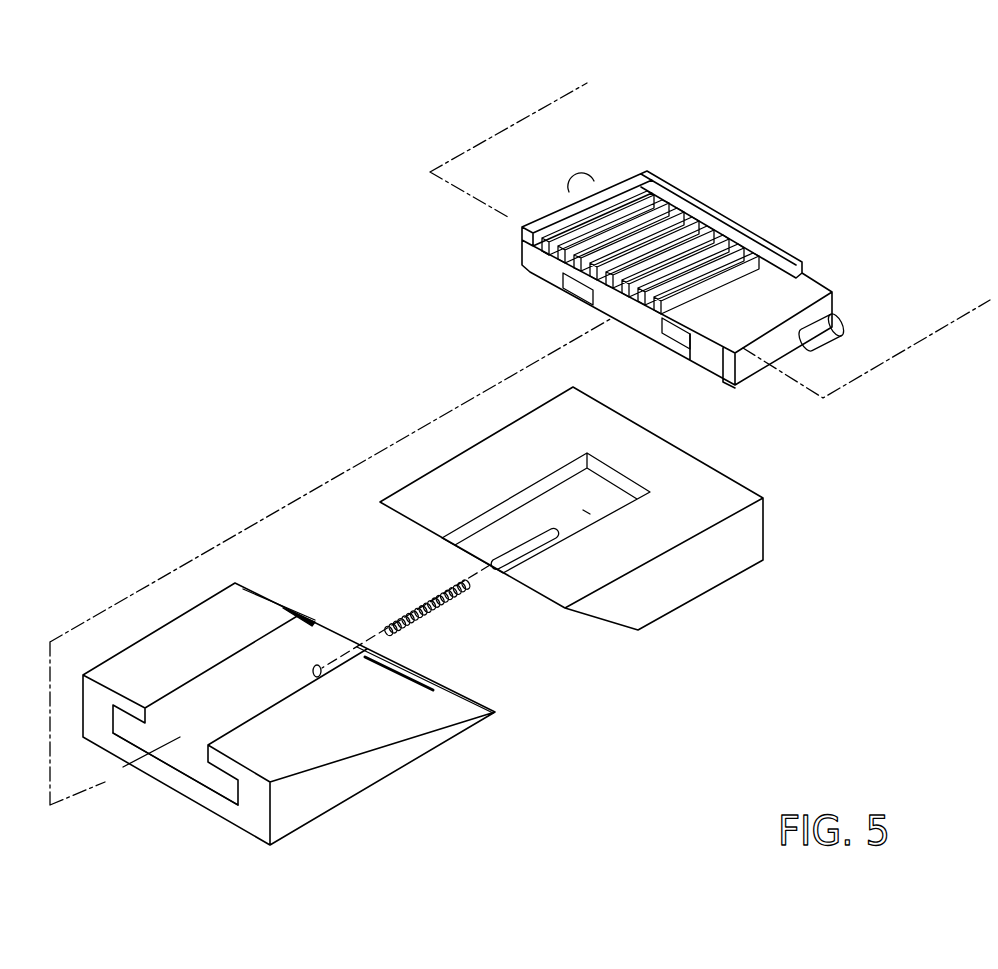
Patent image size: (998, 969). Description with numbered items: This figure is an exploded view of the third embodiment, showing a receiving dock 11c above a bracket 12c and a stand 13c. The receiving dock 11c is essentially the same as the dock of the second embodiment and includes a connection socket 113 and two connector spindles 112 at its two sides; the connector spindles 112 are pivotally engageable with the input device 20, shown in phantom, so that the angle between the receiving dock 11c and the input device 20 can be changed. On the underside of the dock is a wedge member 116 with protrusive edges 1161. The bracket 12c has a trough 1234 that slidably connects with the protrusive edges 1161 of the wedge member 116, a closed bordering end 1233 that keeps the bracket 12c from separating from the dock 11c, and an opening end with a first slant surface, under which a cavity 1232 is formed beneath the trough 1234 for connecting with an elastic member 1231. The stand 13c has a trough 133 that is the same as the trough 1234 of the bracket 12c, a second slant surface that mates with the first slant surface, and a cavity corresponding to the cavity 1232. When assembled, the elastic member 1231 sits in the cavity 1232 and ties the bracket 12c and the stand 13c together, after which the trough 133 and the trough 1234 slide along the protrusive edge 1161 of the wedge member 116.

The receiving dock 11c is at (715, 230).
The connector spindles 112 is at (835, 315).
The connection socket 113 is at (567, 247).
The wedge member 116 is at (627, 311).
The protrusive edges 1161 is at (578, 290).
The input device 20 is at (910, 332).
The bracket 12c is at (605, 547).
The elastic member 1231 is at (445, 610).
The cavity 1232 is at (528, 567).
The closed bordering end 1233 is at (617, 473).
The trough 1234 is at (583, 510).
The stand 13c is at (310, 728).
The trough 133 is at (243, 793).